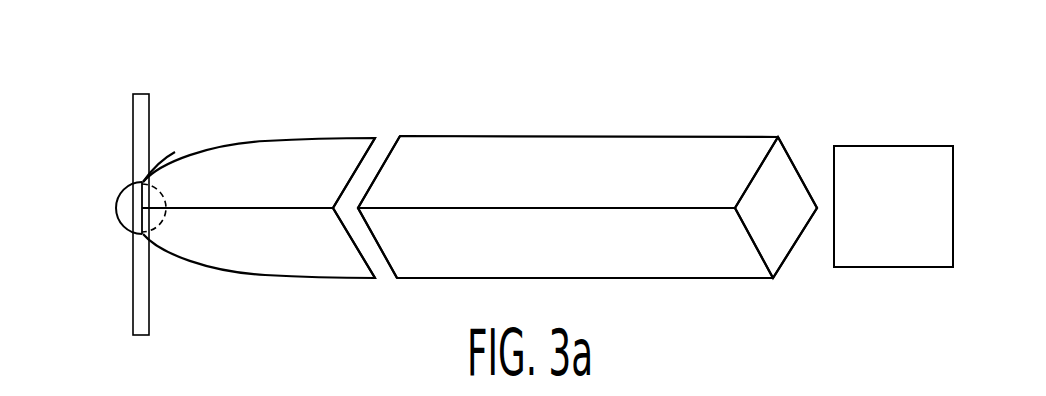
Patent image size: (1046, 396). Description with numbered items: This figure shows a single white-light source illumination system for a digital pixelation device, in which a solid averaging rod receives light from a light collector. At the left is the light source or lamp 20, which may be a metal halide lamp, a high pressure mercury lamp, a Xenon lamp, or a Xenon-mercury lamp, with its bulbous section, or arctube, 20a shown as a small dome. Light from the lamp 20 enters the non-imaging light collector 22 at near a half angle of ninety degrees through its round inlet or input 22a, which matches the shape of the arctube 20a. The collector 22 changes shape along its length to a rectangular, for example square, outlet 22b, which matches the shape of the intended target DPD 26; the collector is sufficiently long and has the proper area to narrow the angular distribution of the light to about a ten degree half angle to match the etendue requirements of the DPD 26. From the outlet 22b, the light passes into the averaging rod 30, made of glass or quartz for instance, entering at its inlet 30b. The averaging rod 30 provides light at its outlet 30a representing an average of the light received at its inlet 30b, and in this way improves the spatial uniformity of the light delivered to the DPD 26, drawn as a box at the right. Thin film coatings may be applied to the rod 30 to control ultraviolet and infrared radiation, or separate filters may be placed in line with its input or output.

The light source or lamp 20 is at (126, 92).
The bulbous section or arctube 20a is at (113, 185).
The non-imaging light collector 22 is at (270, 163).
The round inlet or input 22a is at (145, 180).
The rectangular outlet 22b is at (380, 163).
The averaging rod 30 is at (540, 160).
The outlet 30a is at (775, 173).
The inlet 30b is at (380, 163).
The DPD 26 is at (907, 218).